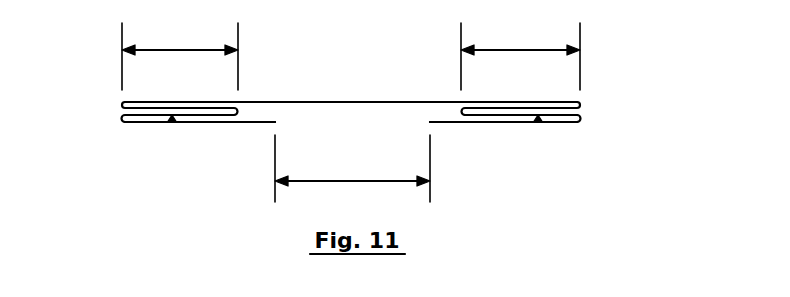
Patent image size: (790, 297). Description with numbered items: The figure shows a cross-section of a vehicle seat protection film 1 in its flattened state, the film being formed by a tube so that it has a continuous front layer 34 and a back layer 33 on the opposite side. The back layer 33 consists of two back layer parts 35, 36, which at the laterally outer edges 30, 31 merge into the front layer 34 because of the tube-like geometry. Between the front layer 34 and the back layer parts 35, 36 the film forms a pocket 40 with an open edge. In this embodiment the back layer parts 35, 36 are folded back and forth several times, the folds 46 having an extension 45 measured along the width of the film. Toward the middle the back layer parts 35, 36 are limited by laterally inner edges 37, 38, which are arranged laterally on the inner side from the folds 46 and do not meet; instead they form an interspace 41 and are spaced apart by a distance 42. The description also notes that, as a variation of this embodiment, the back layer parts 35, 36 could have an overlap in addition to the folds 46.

The vehicle seat protection film 1 is at (412, 72).
The laterally outer edge 30 is at (122, 113).
The laterally outer edge 31 is at (583, 113).
The back layer 33 is at (565, 122).
The front layer 34 is at (350, 102).
The back layer part 35 is at (212, 122).
The back layer part 36 is at (497, 122).
The laterally inner edge 37 is at (275, 121).
The laterally inner edge 38 is at (430, 121).
The pocket 40 is at (257, 112).
The interspace 41 is at (351, 120).
The distance 42 is at (345, 181).
The extension 45 is at (172, 50).
The fold 46 is at (172, 122).